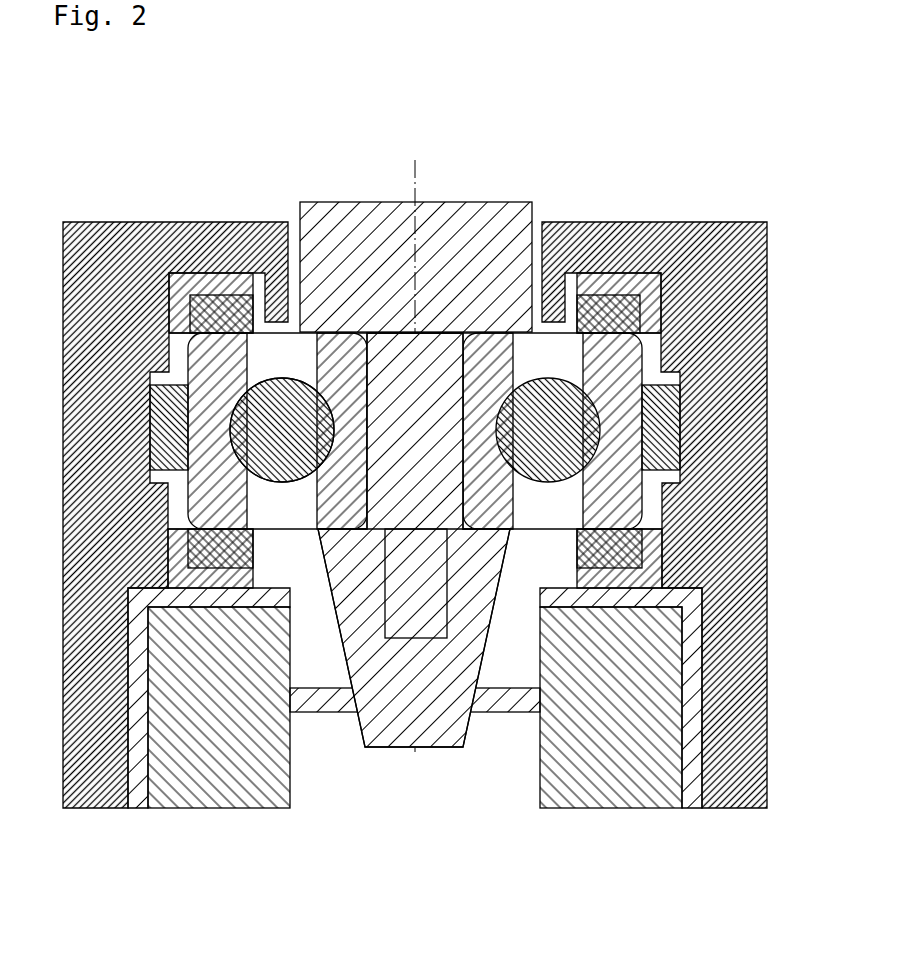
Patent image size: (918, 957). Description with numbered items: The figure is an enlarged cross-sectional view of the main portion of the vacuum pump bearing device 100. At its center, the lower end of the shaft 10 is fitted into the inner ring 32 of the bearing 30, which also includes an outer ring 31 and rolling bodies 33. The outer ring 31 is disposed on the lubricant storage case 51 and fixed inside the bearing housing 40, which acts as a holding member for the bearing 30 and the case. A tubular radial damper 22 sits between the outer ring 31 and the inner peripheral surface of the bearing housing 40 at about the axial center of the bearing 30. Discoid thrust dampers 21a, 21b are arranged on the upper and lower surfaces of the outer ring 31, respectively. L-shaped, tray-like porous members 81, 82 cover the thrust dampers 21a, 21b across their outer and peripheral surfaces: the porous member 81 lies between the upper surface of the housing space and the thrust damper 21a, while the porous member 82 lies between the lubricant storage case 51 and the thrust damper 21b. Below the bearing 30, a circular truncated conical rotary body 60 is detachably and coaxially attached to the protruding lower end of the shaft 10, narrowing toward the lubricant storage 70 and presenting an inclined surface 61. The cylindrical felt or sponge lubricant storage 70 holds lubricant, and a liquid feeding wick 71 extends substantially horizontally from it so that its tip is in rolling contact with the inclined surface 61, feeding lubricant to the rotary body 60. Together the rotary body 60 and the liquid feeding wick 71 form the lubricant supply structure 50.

The vacuum pump bearing device 100 is at (704, 117).
The shaft 10 is at (478, 230).
The bearing housing 40 is at (732, 242).
The bearing 30 is at (205, 343).
The inner ring 32 is at (335, 357).
The radial damper 22 is at (160, 417).
The outer ring 31 is at (230, 407).
The rolling bodies 33 is at (280, 457).
The thrust damper 21a is at (232, 283).
The thrust damper 21b is at (623, 552).
The porous member 81 is at (645, 282).
The porous member 82 is at (625, 578).
The lubricant storage case 51 is at (168, 602).
The rotary body 60 is at (460, 663).
The inclined surface 61 is at (348, 663).
The lubricant storage 70 is at (643, 730).
The liquid feeding wick 71 is at (533, 712).
The lubricant supply structure 50 is at (420, 617).